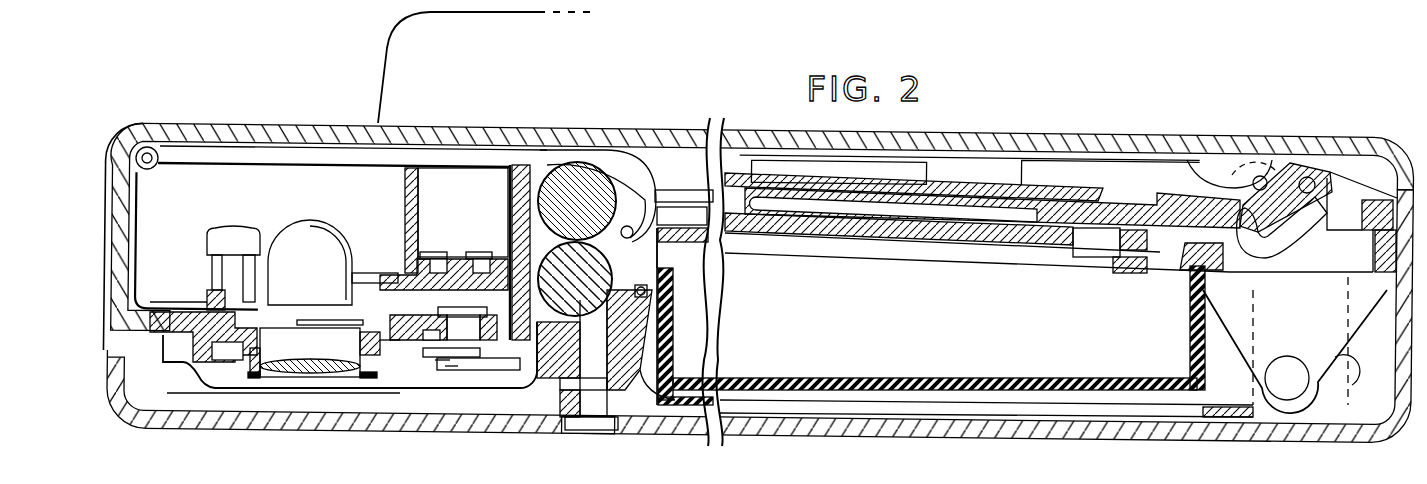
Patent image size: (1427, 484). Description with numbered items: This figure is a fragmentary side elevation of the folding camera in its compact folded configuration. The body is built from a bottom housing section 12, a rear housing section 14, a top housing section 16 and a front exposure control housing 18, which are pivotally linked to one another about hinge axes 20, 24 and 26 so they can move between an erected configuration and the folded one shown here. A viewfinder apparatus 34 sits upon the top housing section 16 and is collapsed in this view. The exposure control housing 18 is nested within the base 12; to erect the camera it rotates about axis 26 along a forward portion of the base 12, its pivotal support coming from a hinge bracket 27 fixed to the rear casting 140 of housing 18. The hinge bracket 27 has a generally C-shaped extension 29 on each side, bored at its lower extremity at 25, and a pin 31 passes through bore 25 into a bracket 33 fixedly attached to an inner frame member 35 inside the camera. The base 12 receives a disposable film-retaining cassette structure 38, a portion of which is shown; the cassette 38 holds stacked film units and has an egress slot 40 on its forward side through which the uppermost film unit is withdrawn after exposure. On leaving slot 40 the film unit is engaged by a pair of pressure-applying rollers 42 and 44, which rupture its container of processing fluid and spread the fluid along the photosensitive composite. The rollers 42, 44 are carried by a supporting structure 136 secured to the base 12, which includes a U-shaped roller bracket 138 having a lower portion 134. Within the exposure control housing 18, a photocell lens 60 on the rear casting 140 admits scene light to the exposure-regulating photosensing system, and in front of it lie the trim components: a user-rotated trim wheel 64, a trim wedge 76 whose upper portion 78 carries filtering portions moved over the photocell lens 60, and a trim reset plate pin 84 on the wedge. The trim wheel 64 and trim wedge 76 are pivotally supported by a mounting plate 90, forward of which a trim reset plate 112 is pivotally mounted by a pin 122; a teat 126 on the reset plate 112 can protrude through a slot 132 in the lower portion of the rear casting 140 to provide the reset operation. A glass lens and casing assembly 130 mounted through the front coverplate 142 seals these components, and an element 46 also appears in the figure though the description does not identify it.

The bottom housing section 12 is at (1305, 449).
The rear housing section 14 is at (1050, 110).
The top housing section 16 is at (318, 126).
The front exposure control housing 18 is at (283, 113).
The hinge axis 20 is at (1258, 176).
The hinge axis 24 is at (150, 147).
The bore 25 is at (631, 239).
The hinge axis 26 is at (650, 246).
The hinge bracket 27 is at (420, 142).
The C-shaped extension 29 is at (632, 172).
The pin 31 is at (655, 329).
The bracket 33 is at (668, 218).
The viewfinder apparatus 34 is at (386, 60).
The inner frame member 35 is at (675, 198).
The film-retaining cassette structure 38 is at (1062, 395).
The egress opening or slot 40 is at (689, 306).
The pressure-applying roller 42 is at (569, 211).
The pressure-applying roller 44 is at (567, 289).
The member 46 is at (590, 481).
The photocell lens 60 is at (333, 236).
The trim wheel 64 is at (200, 358).
The trim wedge 76 is at (438, 323).
The upper portion of trim wedge 78 is at (352, 315).
The trim reset plate pin 84 is at (392, 360).
The mounting plate 90 is at (392, 350).
The trim reset plate 112 is at (442, 362).
The pin 122 is at (451, 366).
The teat 126 is at (535, 382).
The glass lens and casing assembly 130 is at (323, 360).
The slot 132 is at (537, 348).
The lower portion of roller bracket 134 is at (535, 428).
The supporting structure 136 is at (625, 337).
The U-shaped roller bracket 138 is at (633, 356).
The rear casting 140 is at (510, 213).
The front coverplate 142 is at (372, 390).